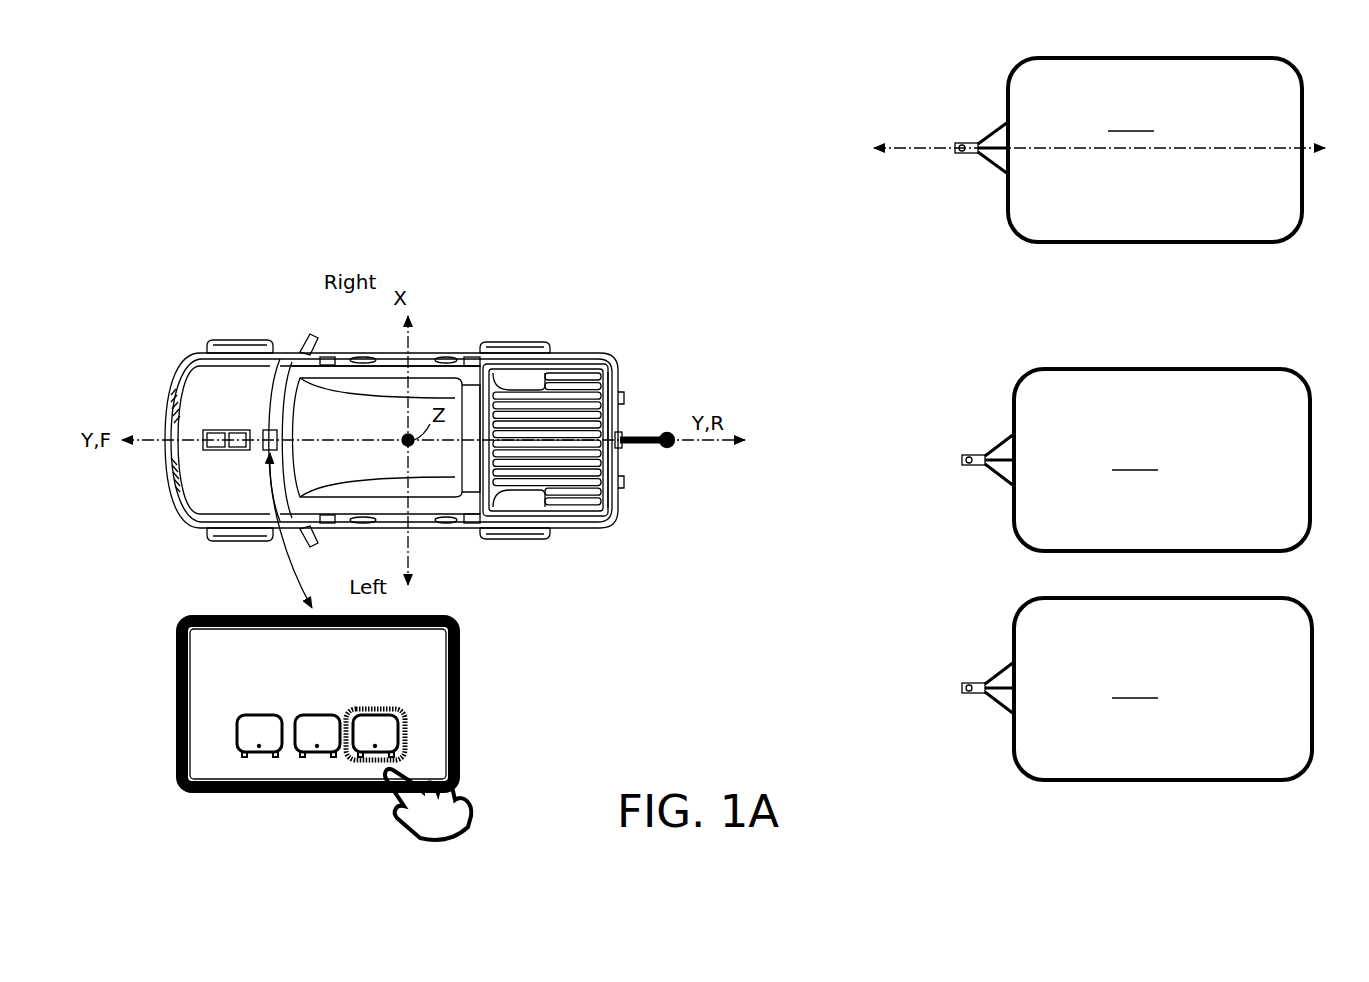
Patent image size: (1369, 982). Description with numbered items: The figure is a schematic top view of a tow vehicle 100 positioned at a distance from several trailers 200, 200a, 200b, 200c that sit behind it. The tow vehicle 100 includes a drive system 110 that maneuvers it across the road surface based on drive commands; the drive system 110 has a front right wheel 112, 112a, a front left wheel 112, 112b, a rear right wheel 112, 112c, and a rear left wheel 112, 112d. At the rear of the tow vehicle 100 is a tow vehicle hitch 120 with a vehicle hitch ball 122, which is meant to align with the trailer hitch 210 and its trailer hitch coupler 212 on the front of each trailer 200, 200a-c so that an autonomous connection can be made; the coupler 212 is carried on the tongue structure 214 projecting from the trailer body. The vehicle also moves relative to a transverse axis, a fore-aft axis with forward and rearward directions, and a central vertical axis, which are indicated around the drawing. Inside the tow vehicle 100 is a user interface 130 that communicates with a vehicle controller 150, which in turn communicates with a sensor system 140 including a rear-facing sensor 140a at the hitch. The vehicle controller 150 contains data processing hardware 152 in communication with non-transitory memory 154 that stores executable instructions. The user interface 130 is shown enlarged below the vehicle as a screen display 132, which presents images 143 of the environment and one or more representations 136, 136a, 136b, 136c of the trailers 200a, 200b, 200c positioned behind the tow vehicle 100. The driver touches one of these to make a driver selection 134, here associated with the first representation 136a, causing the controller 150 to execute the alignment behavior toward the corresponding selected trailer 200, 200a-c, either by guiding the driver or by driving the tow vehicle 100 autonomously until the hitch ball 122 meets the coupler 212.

The tow vehicle 100 is at (176, 342).
The drive system 110 is at (370, 412).
The wheel 112 is at (378, 406).
The front right wheel 112a is at (240, 347).
The front left wheel 112b is at (238, 535).
The rear right wheel 112c is at (527, 347).
The rear left wheel 112d is at (527, 535).
The tow vehicle hitch 120 is at (641, 446).
The vehicle hitch ball 122 is at (672, 448).
The user interface 130 is at (276, 432).
The screen display 132 is at (448, 700).
The driver selection 134 is at (396, 712).
The representation 136 is at (316, 708).
The representation 136a is at (370, 716).
The representation 136b is at (312, 716).
The representation 136c is at (254, 716).
The sensor system 140 is at (336, 357).
The rear camera 140a is at (679, 494).
The image 143 is at (209, 656).
The vehicle controller 150 is at (226, 430).
The data processing hardware 152 is at (214, 449).
The non-transitory memory 154 is at (241, 450).
The trailer 200 is at (1133, 404).
The trailer 200a is at (1204, 131).
The trailer 200b is at (1208, 470).
The trailer 200c is at (1208, 698).
The trailer hitch 210 is at (957, 77).
The trailer hitch coupler 212 is at (955, 146).
The tow bar / tongue 214 is at (990, 138).